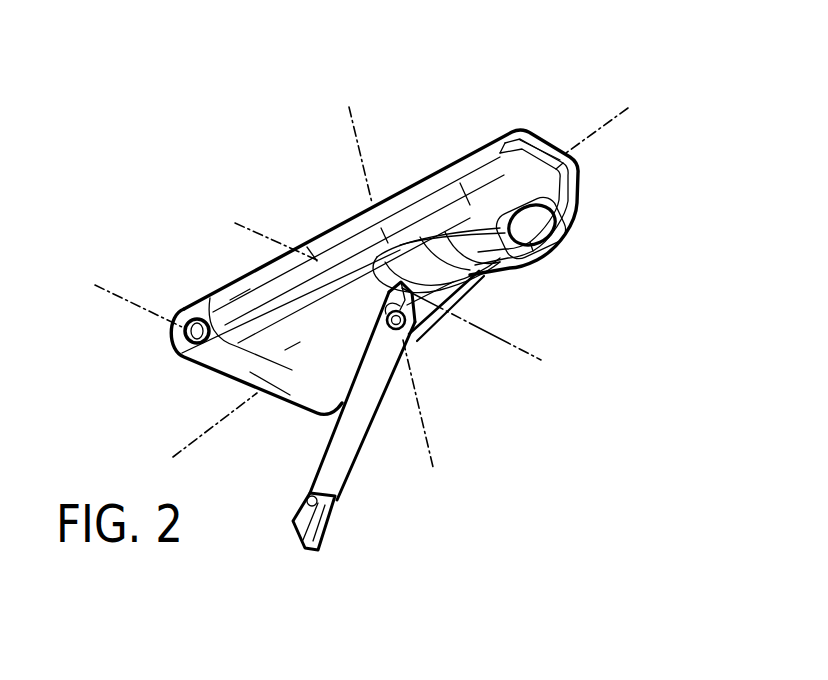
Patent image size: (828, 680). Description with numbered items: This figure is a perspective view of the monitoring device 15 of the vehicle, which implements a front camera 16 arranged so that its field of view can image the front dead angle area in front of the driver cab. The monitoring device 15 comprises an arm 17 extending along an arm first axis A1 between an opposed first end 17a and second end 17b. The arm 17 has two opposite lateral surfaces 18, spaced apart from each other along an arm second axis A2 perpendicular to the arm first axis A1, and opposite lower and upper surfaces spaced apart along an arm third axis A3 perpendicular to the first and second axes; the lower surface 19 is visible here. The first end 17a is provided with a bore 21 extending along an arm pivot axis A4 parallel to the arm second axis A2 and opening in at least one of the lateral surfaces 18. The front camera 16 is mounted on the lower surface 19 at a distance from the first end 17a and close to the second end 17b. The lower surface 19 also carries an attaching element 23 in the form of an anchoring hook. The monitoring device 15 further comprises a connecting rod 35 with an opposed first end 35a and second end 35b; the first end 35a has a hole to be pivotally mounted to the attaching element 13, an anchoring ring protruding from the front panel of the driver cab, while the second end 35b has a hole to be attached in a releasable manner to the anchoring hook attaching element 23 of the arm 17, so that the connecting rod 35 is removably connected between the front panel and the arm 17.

The attaching element 13 is at (317, 535).
The monitoring device 15 is at (538, 388).
The front camera 16 is at (540, 228).
The arm 17 is at (458, 136).
The first end 17a is at (268, 392).
The second end 17b is at (543, 147).
The lateral surfaces 18 is at (235, 305).
The lower surface 19 is at (292, 370).
The bore 21 is at (195, 333).
The attaching element 23 is at (420, 318).
The connecting rod 35 is at (348, 440).
The first end 35a is at (337, 498).
The second end 35b is at (403, 328).
The arm first axis A1 is at (610, 127).
The arm second axis A2 is at (255, 228).
The arm third axis A3 is at (350, 107).
The arm pivot axis A4 is at (110, 288).